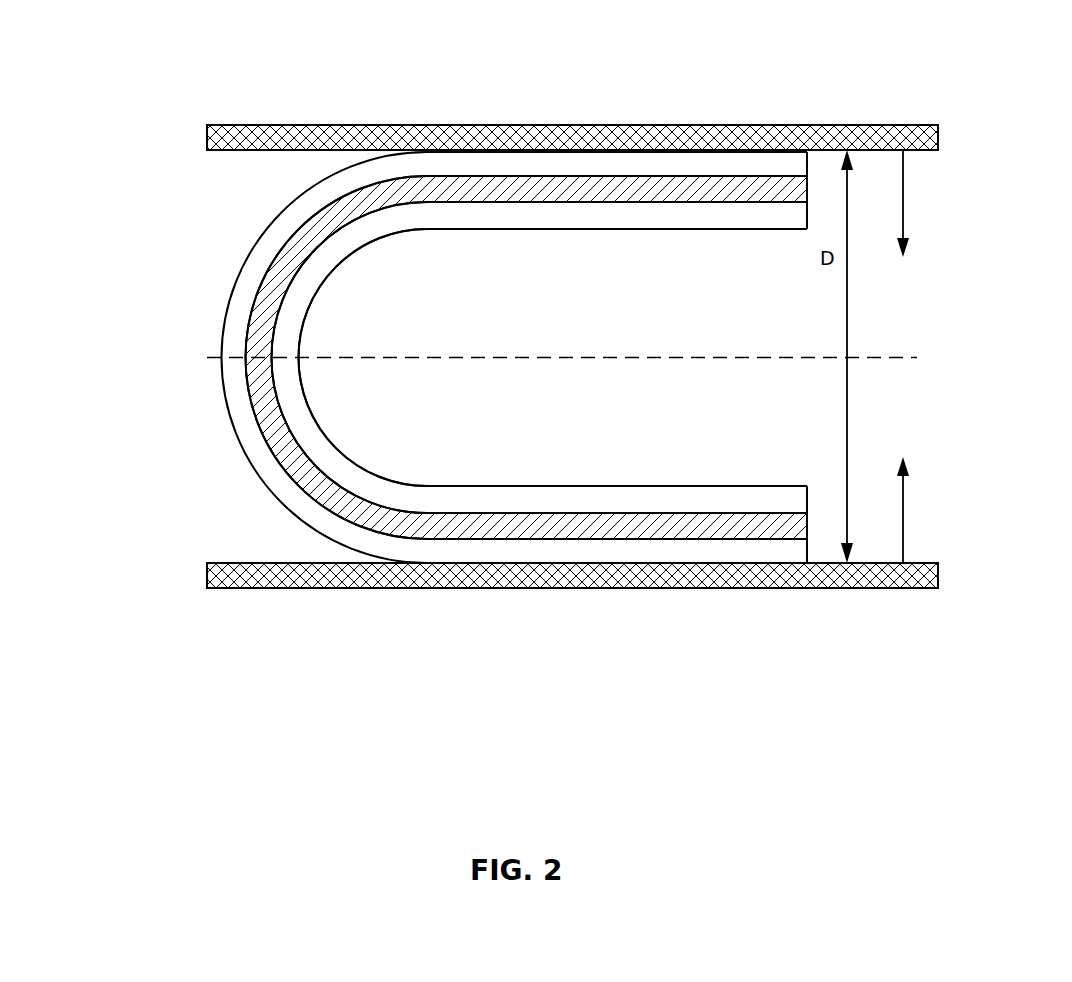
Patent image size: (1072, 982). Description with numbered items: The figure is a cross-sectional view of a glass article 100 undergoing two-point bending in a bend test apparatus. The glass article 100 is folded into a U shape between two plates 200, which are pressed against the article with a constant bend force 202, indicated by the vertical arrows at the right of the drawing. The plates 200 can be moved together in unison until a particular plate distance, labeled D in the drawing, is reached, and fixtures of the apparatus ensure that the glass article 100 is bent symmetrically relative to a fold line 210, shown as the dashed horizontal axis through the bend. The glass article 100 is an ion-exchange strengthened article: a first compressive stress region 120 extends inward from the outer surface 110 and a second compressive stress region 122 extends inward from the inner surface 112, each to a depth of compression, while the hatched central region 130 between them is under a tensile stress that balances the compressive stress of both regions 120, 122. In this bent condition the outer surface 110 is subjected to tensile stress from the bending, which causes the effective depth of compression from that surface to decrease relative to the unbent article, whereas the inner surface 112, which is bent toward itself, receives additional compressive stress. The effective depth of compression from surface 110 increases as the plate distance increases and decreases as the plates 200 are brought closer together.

The glass article 100 is at (423, 357).
The surface 110 is at (227, 300).
The surface 112 is at (455, 486).
The first compressive stress region 120 is at (500, 553).
The second compressive stress region 122 is at (562, 215).
The central region 130 is at (617, 523).
The plates 200 is at (812, 140).
The bend force 202 is at (902, 213).
The fold line 210 is at (917, 357).